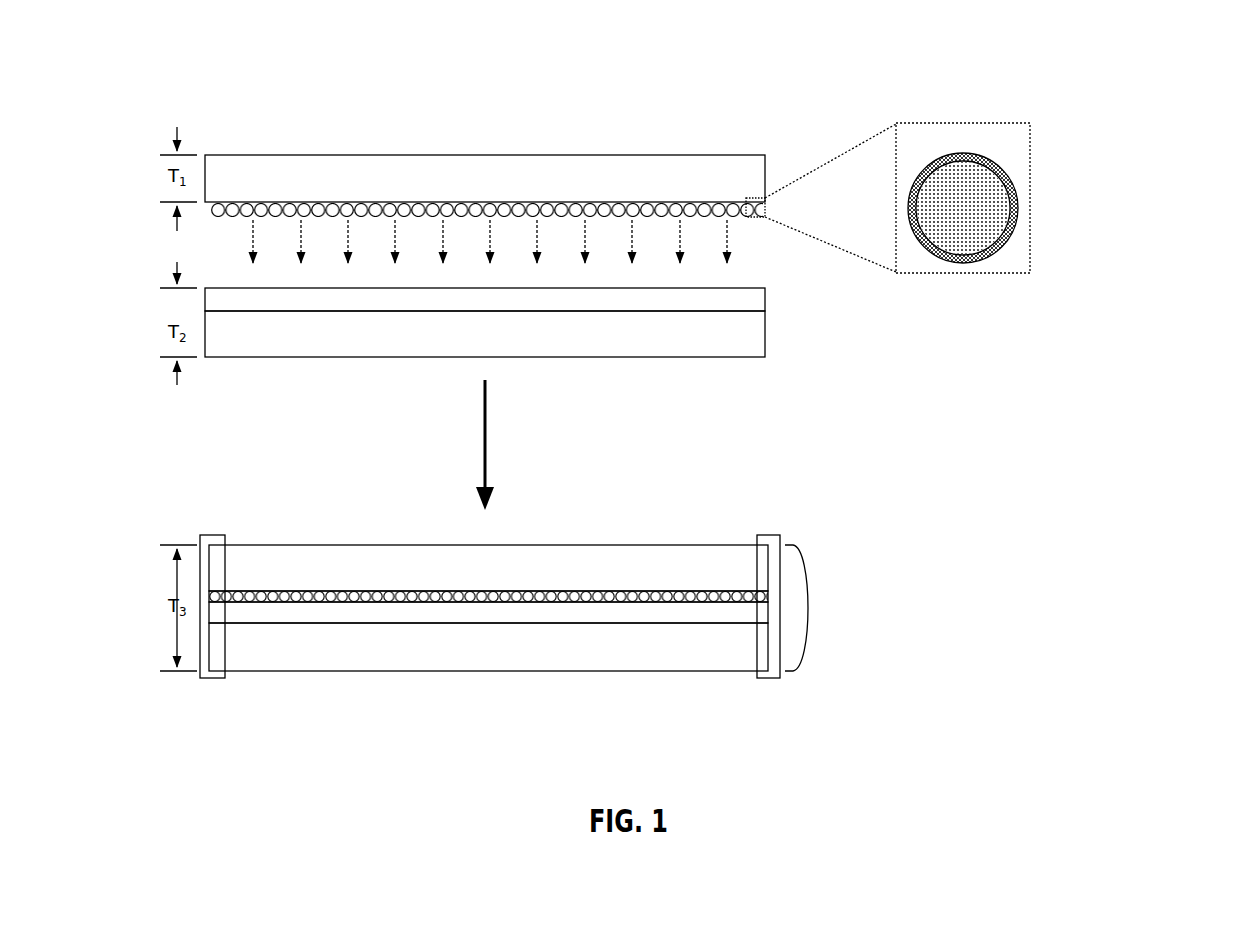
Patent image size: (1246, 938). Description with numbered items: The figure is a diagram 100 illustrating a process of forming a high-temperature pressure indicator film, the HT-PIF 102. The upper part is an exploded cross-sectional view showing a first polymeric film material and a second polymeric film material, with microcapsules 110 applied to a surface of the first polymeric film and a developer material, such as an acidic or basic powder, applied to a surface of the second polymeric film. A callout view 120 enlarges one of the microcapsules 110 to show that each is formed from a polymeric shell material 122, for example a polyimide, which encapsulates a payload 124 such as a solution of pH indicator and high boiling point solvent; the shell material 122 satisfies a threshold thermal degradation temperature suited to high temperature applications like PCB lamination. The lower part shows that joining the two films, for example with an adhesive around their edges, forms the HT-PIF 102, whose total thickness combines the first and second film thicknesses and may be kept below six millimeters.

The diagram 100 is at (1094, 58).
The high-temperature pressure indicator film (HT-PIF) 102 is at (607, 636).
The microcapsules 110 is at (740, 220).
The callout view 120 is at (979, 146).
The polymeric shell material 122 is at (1006, 170).
The payload 124 is at (973, 211).